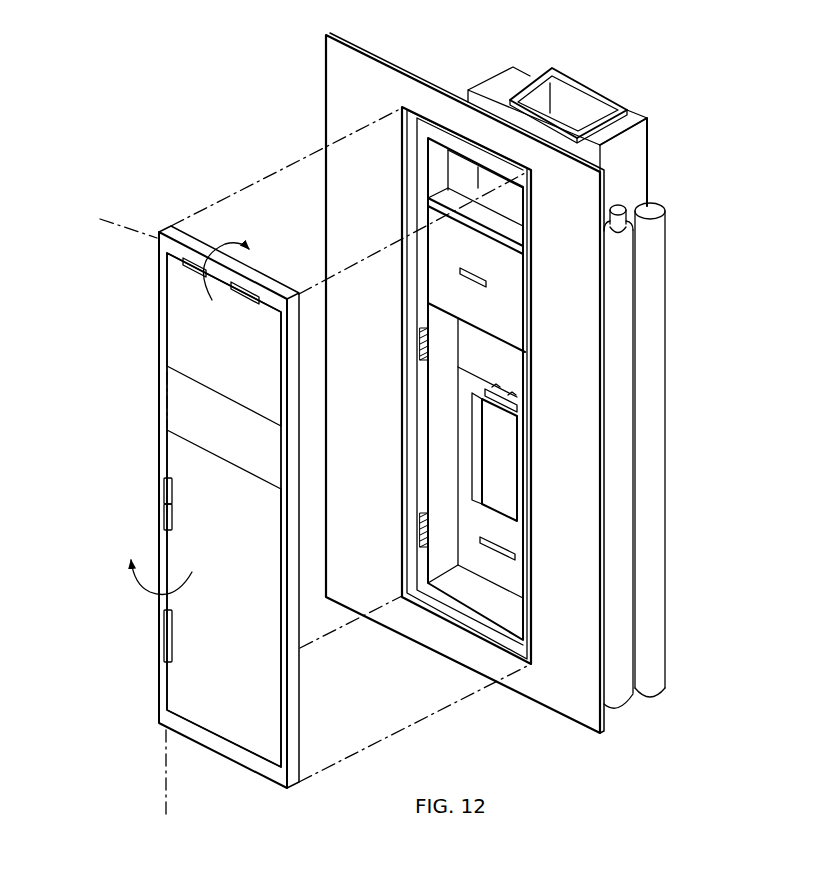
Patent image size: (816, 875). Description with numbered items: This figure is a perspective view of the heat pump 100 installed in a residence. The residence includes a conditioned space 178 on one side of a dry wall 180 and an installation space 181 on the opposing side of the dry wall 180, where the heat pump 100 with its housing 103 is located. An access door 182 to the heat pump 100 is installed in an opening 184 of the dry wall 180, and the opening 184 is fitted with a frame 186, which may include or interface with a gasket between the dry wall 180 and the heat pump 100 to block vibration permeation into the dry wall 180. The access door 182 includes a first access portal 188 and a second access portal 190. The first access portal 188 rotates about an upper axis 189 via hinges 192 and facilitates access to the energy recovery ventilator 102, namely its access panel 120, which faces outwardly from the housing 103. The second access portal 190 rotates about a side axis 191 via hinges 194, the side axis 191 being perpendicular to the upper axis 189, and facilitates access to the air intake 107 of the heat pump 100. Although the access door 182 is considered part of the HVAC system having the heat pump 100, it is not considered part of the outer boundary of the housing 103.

The heat pump 100 is at (648, 66).
The energy recovery ventilator 102 is at (505, 276).
The housing 103 is at (630, 145).
The air intake 107 is at (498, 461).
The access panel 120 is at (475, 265).
The conditioned space 178 is at (36, 531).
The dry wall 180 is at (355, 92).
The installation space 181 is at (704, 174).
The access door 182 is at (147, 377).
The opening 184 is at (502, 362).
The frame 186 is at (423, 132).
The first access portal 188 is at (201, 346).
The upper axis 189 is at (122, 225).
The second access portal 190 is at (244, 665).
The side axis 191 is at (168, 763).
The hinges 192 is at (190, 262).
The hinges 194 is at (164, 503).